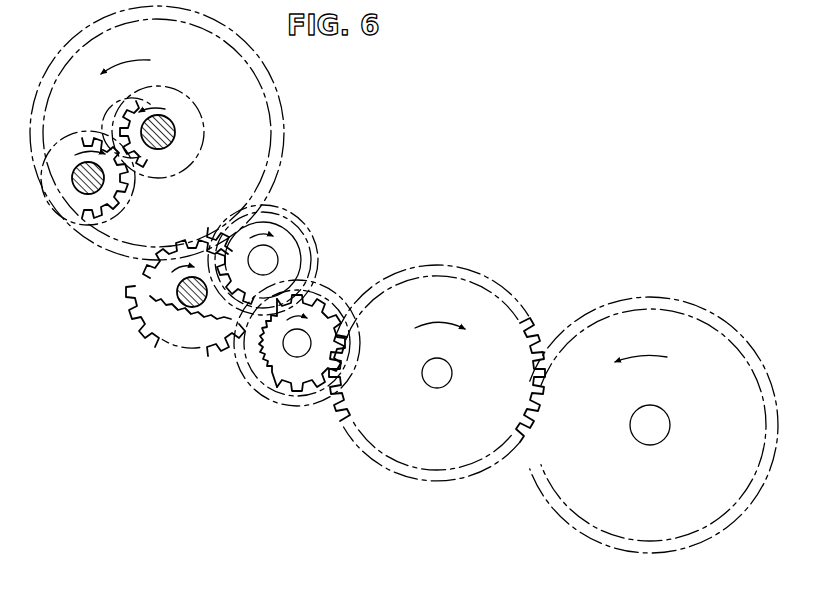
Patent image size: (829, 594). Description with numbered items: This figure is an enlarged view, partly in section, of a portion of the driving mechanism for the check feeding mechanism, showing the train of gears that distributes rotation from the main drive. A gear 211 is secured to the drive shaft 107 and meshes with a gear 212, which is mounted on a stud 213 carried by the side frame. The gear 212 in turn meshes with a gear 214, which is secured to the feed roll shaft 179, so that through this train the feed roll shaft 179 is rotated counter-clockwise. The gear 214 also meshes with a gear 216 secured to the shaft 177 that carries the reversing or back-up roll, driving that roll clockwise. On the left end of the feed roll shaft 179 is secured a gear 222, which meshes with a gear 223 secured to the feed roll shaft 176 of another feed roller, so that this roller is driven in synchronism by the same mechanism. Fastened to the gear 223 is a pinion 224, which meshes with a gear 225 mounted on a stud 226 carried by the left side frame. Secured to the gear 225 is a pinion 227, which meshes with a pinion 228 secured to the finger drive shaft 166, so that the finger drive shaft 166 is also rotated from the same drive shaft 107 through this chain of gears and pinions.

The drive shaft 107 is at (655, 422).
The finger drive shaft 166 is at (80, 192).
The feed roll shaft 176 is at (185, 303).
The shaft 177 is at (265, 260).
The feed roll shaft 179 is at (288, 345).
The gear 211 is at (630, 305).
The gear 212 is at (475, 282).
The stud 213 is at (438, 386).
The gear 214 is at (326, 306).
The gear 216 is at (296, 262).
The gear 222 is at (247, 362).
The gear 223 is at (140, 320).
The pinion 224 is at (160, 265).
The gear 225 is at (272, 130).
The stud 226 is at (165, 127).
The pinion 227 is at (145, 169).
The pinion 228 is at (98, 140).